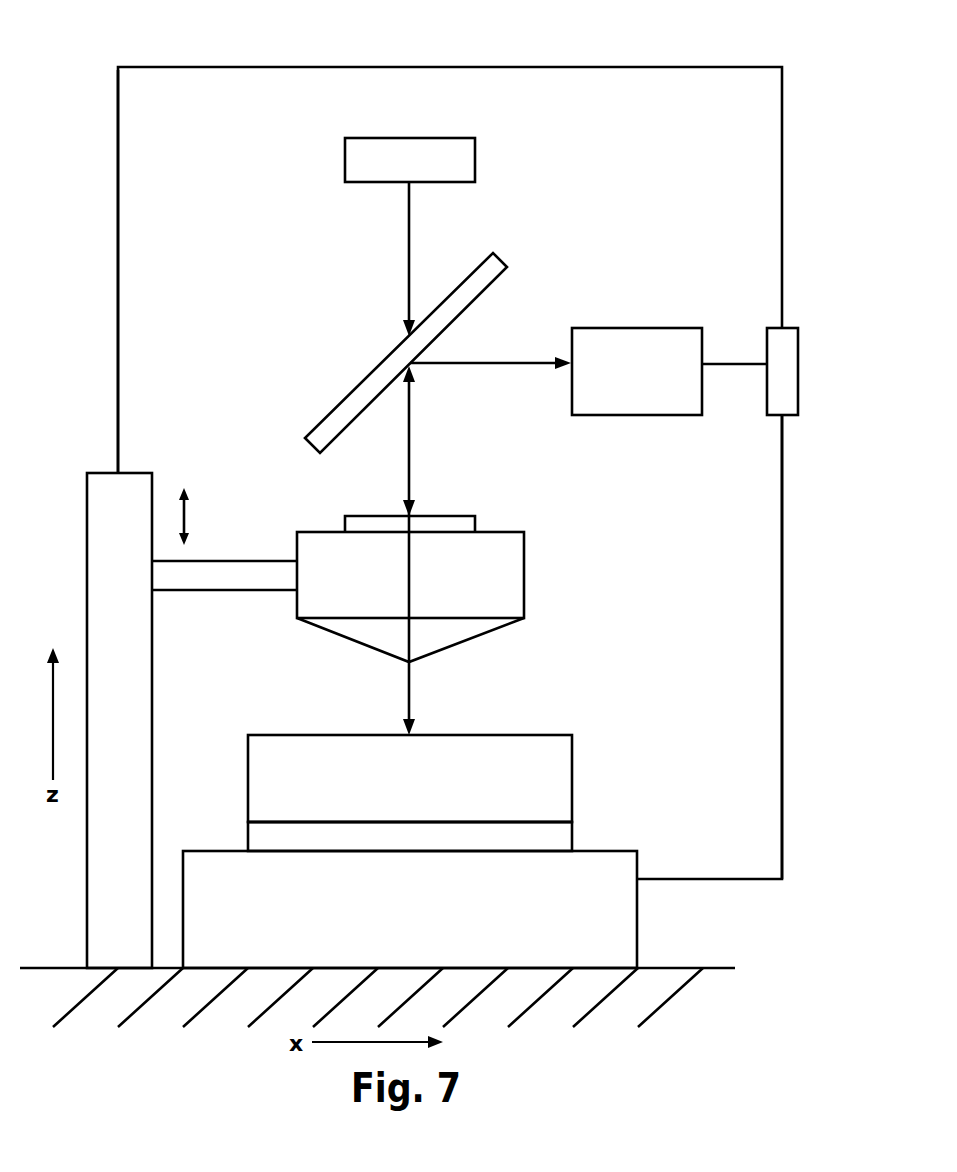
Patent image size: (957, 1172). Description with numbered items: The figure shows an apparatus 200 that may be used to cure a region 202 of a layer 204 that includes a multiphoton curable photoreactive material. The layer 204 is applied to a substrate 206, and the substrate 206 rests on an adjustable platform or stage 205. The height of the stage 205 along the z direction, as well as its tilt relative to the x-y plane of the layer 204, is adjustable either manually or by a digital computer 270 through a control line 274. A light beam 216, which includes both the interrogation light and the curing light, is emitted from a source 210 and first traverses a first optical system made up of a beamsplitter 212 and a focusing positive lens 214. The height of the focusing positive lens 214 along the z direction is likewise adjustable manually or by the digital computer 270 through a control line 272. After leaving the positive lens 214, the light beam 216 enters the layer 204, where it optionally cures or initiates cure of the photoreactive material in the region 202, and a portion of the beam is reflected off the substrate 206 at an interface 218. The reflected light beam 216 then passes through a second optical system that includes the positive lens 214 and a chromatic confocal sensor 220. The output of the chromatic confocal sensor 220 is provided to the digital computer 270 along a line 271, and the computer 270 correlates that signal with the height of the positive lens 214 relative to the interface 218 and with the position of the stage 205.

The apparatus 200 is at (162, 30).
The region 202 is at (467, 815).
The layer 204 is at (506, 750).
The stage 205 is at (587, 908).
The substrate 206 is at (538, 836).
The source 210 is at (458, 153).
The beamsplitter 212 is at (365, 385).
The focusing positive lens 214 is at (314, 545).
The light beam 216 is at (408, 235).
The interface 218 is at (533, 820).
The chromatic confocal sensor 220 is at (637, 343).
The digital computer 270 is at (783, 400).
The line 271 is at (742, 360).
The control line 272 is at (110, 301).
The control line 274 is at (782, 602).